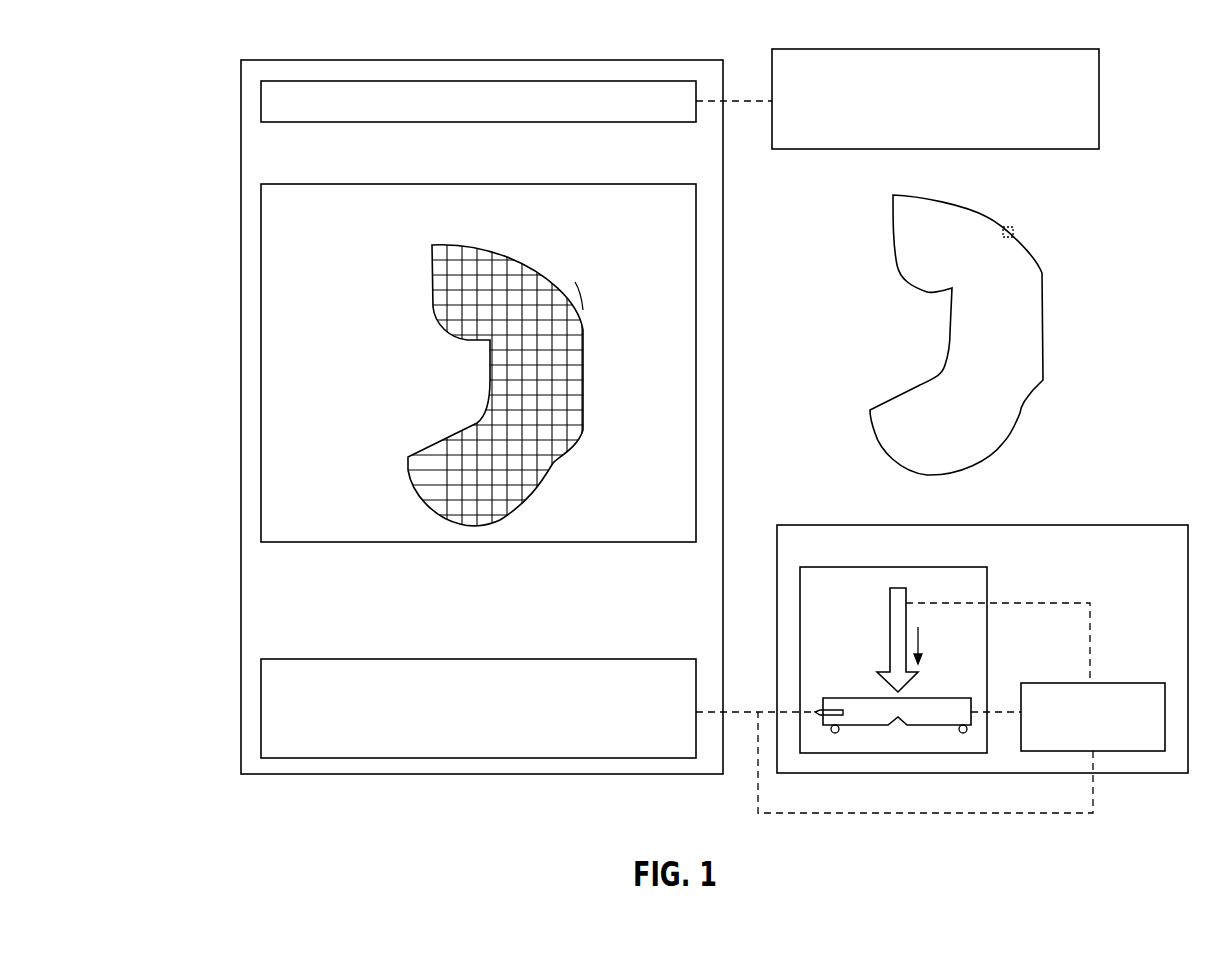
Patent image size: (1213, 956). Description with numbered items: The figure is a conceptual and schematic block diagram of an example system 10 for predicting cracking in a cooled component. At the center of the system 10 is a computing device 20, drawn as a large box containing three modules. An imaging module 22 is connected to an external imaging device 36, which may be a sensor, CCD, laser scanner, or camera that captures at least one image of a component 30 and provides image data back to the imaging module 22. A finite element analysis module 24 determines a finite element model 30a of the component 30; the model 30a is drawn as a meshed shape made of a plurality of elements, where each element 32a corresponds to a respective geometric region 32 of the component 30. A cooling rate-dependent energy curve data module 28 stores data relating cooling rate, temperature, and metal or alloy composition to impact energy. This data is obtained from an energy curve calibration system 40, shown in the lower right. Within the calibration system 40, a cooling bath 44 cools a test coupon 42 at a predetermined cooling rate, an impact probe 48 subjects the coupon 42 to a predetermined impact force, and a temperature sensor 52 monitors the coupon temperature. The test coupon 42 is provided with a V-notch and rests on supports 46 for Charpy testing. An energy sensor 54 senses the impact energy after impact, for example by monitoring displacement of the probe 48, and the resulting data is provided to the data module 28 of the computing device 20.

The system 10 is at (218, 90).
The computing device 20 is at (241, 152).
The imaging module 22 is at (478, 101).
The finite element analysis module 24 is at (485, 363).
The cooling rate-dependent energy curve data module 28 is at (478, 708).
The component 30 is at (1038, 272).
The finite element model 30a is at (443, 375).
The geometric region 32 is at (1013, 230).
The element 32a is at (563, 292).
The imaging device 36 is at (935, 99).
The energy curve calibration system 40 is at (1090, 525).
The test coupon 42 is at (940, 726).
The cooling bath 44 is at (972, 567).
The supports 46 is at (964, 733).
The impact probe 48 is at (890, 588).
The temperature sensor 52 is at (827, 715).
The energy sensor 54 is at (1093, 717).